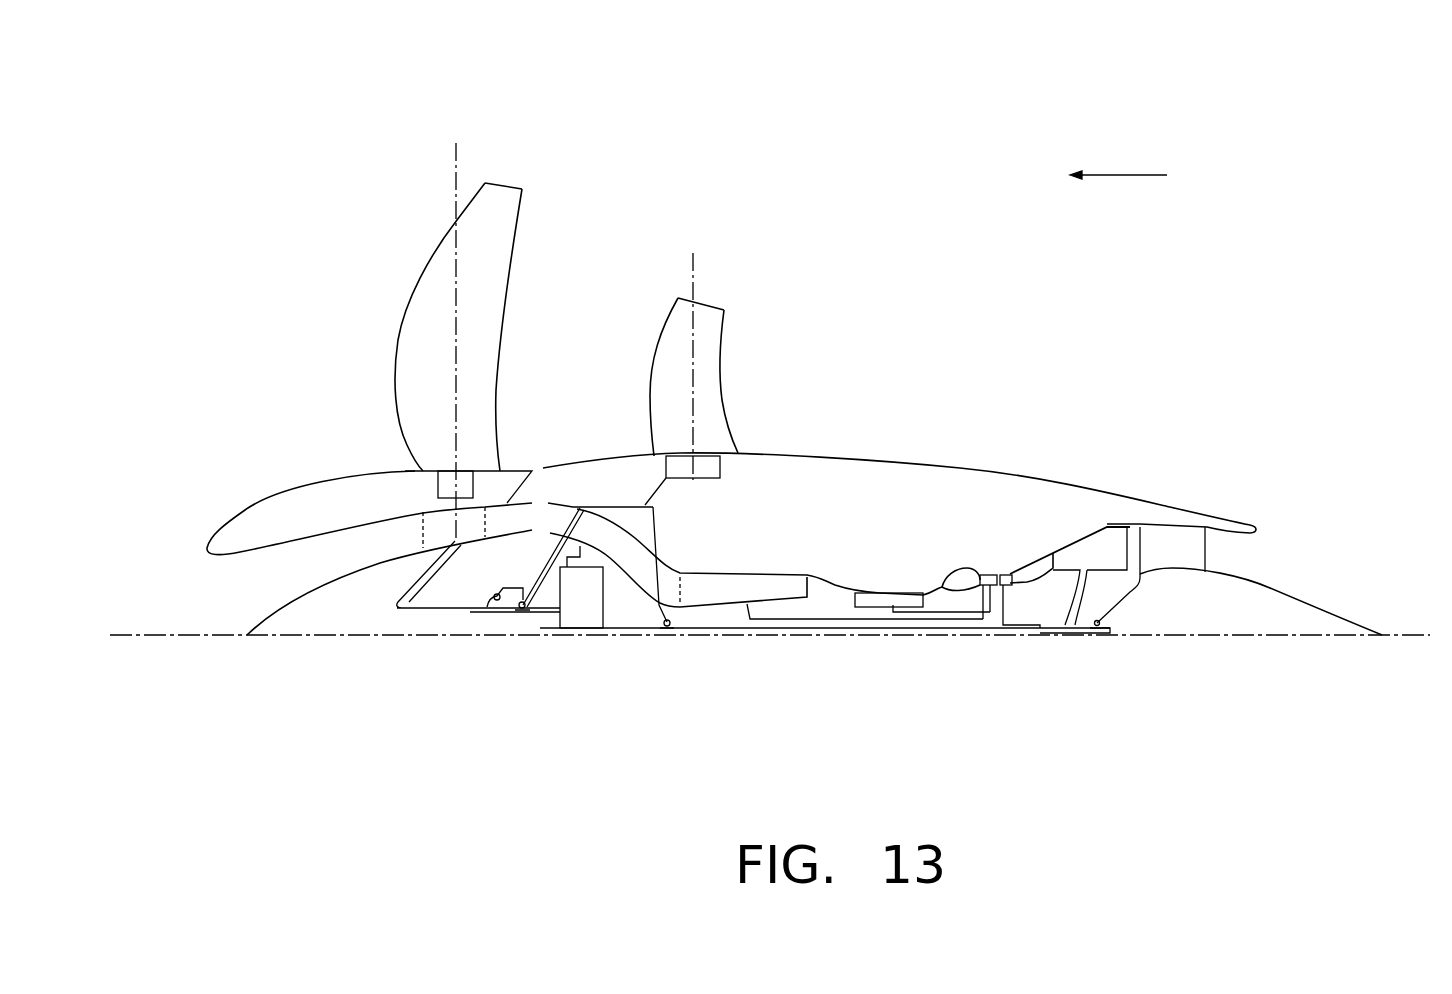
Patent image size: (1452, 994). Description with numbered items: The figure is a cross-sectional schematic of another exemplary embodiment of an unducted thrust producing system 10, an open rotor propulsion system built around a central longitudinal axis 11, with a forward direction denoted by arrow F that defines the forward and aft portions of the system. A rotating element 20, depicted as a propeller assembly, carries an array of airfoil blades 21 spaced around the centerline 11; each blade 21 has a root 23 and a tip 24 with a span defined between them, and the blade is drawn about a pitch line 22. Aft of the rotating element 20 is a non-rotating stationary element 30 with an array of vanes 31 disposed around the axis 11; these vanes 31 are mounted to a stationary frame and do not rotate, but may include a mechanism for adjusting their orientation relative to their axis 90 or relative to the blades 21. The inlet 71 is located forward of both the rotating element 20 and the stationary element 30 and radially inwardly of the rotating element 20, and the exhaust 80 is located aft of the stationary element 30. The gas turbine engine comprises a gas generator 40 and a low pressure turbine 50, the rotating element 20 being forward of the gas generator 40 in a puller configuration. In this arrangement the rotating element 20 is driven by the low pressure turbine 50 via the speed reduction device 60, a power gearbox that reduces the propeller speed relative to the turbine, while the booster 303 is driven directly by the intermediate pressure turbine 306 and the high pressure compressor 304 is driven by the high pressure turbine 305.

The unducted thrust producing system 10 is at (726, 140).
The central longitudinal axis 11 is at (372, 643).
The forward direction arrow F is at (1135, 175).
The rotating element 20 is at (300, 340).
The airfoil blades 21 is at (403, 325).
The pitch axis 22 is at (454, 168).
The root 23 is at (424, 470).
The tip 24 is at (512, 186).
The non-rotating stationary element 30 is at (835, 252).
The vanes 31 is at (723, 383).
The gas generator 40 is at (873, 520).
The low pressure turbine 50 is at (1100, 540).
The speed reduction device 60 is at (586, 633).
The inlet 71 is at (233, 583).
The exhaust 80 is at (1280, 550).
The axis 90 is at (690, 275).
The booster 303 is at (736, 566).
The high pressure compressor 304 is at (885, 580).
The high pressure turbine 305 is at (983, 600).
The intermediate pressure turbine 306 is at (1018, 600).